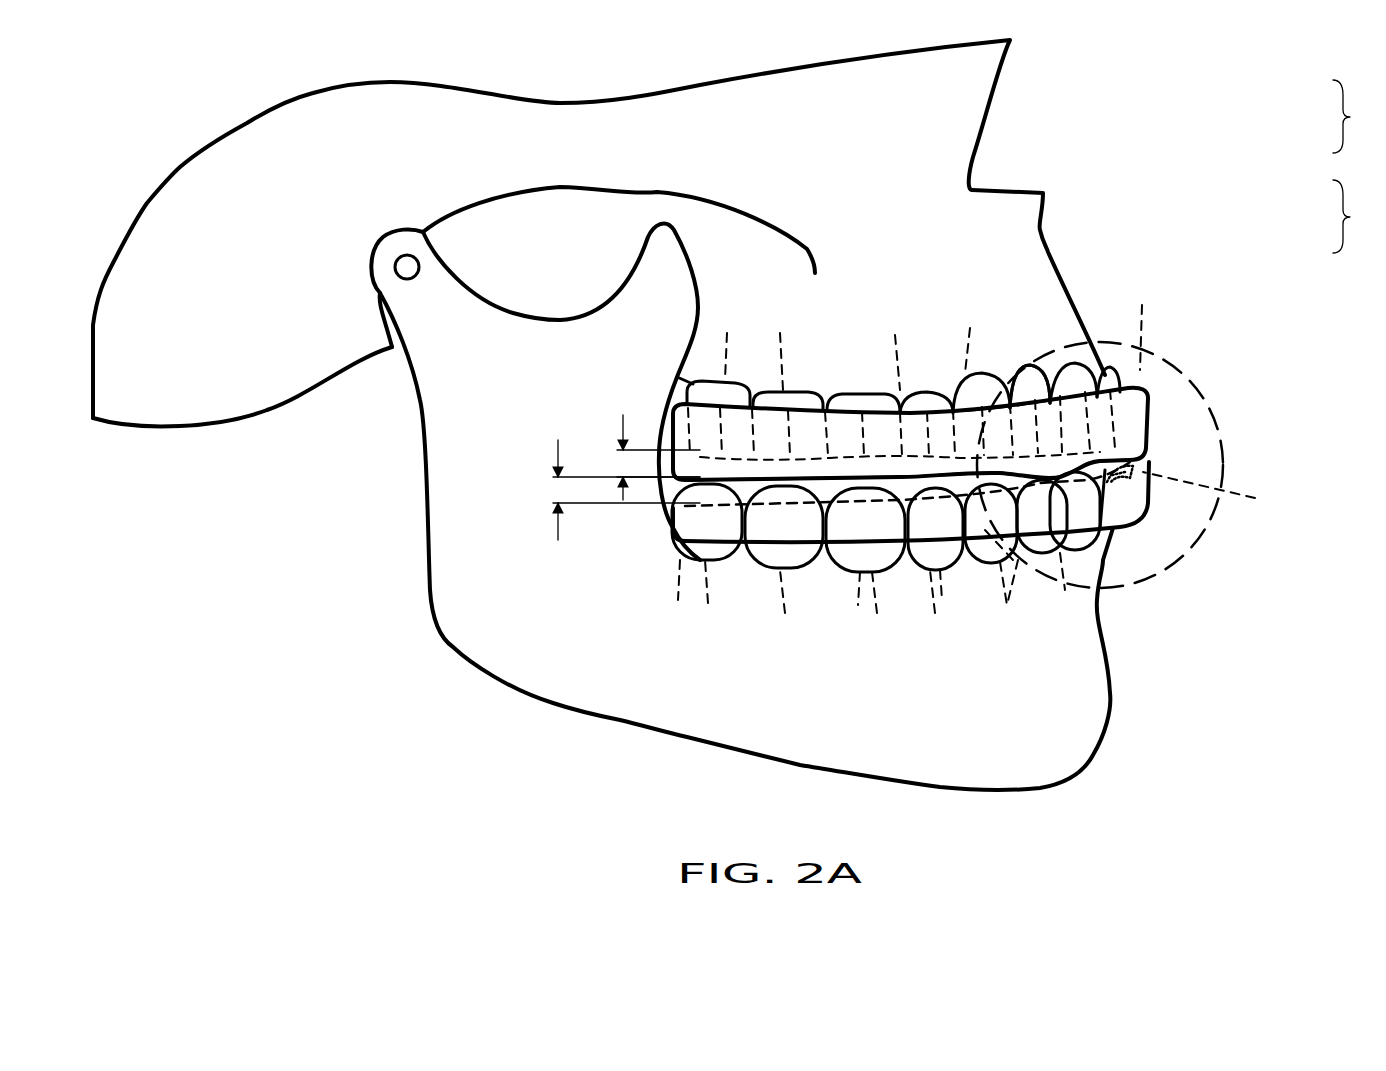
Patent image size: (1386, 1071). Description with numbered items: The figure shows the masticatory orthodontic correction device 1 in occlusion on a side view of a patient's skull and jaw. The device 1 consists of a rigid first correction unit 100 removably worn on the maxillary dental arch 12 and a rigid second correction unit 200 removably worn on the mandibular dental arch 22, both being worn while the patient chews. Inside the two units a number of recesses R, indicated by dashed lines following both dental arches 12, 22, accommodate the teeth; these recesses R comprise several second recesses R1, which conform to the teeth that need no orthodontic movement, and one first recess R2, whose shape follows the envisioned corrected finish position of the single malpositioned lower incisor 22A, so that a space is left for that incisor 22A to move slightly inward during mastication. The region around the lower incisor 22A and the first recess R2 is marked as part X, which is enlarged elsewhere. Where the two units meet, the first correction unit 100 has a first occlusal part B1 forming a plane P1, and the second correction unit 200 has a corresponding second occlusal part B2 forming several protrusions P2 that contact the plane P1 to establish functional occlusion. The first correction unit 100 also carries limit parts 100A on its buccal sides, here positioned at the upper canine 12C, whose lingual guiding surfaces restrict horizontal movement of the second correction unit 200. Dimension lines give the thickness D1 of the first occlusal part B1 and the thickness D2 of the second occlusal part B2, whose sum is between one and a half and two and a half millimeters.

The masticatory orthodontic correction device 1 is at (1328, 216).
The first correction unit 100 is at (1150, 410).
The second correction unit 200 is at (1152, 500).
The limit part 100A is at (1030, 403).
The maxillary dental arch 12 is at (932, 386).
The upper canine 12C is at (1033, 370).
The mandibular dental arch 22 is at (1048, 564).
The lower incisor 22A is at (1115, 565).
The recesses R is at (1354, 116).
The second recesses R1 is at (1011, 367).
The first recess R2 is at (1236, 318).
The plane P1 is at (1000, 469).
The protrusions P2 is at (1135, 463).
The first occlusal part B1 is at (795, 481).
The second occlusal part B2 is at (903, 566).
The part X is at (1180, 368).
The thickness of the first occlusal part D1 is at (639, 457).
The thickness of the second occlusal part D2 is at (605, 490).